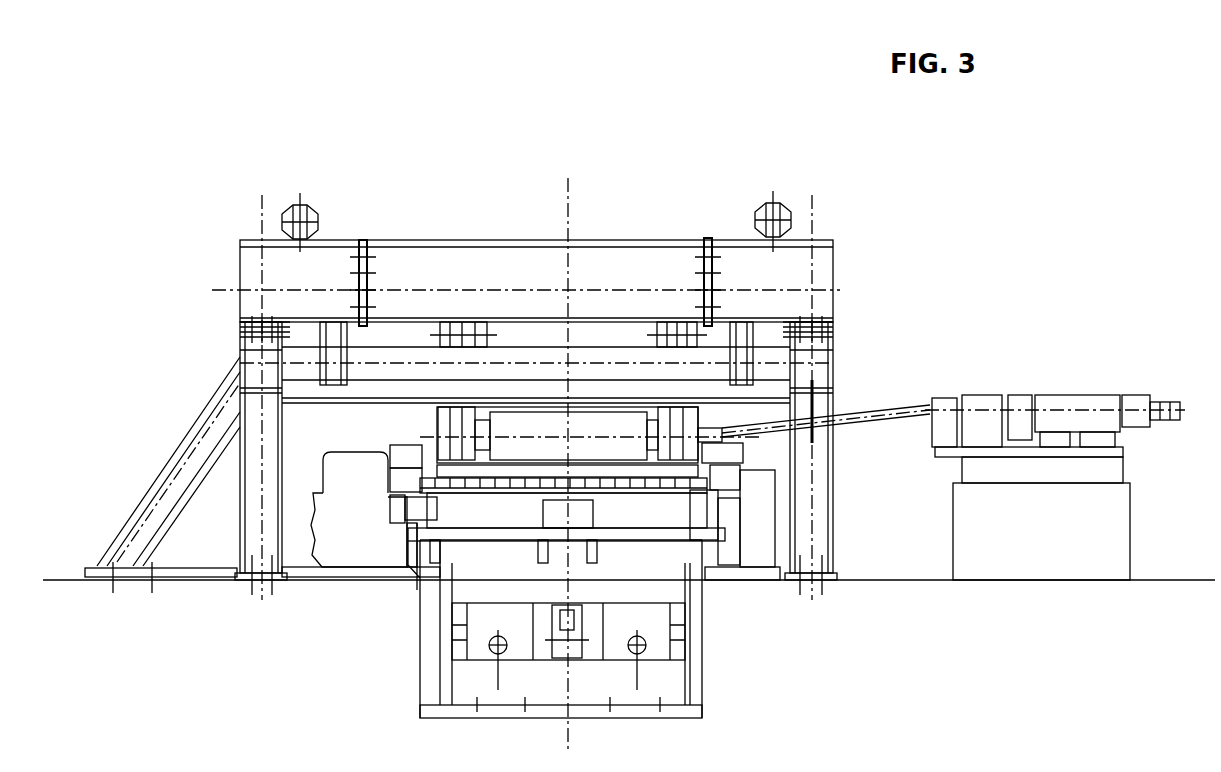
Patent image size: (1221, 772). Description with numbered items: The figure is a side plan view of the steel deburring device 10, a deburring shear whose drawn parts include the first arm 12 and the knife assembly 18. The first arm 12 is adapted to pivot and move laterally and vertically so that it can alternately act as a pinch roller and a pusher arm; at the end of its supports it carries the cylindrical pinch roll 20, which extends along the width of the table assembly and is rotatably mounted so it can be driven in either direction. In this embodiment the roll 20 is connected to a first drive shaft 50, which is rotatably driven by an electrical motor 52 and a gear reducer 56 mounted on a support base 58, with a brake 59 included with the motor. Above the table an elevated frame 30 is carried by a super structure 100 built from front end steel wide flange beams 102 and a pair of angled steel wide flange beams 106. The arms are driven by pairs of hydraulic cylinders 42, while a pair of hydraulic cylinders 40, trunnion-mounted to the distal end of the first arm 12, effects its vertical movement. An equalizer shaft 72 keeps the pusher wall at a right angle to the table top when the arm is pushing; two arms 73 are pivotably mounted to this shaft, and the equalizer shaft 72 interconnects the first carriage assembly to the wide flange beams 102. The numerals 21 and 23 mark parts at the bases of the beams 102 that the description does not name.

The steel deburring device 10 is at (732, 114).
The first arm 12 is at (400, 437).
The knife assembly 18 is at (714, 602).
The cylindrical pinch roll 20 is at (422, 435).
The base plate 21 is at (240, 555).
The base plate 23 is at (833, 548).
The elevated frame 30 is at (695, 234).
The hydraulic cylinders 40 is at (495, 322).
The hydraulic cylinders 42 is at (310, 203).
The first drive shaft 50 is at (873, 413).
The electrical motor 52 is at (1070, 397).
The gear reducer 56 is at (983, 395).
The support base 58 is at (1057, 578).
The brake 59 is at (1023, 395).
The equalizer shaft 72 is at (557, 358).
The arms 73 is at (320, 340).
The super structure 100 is at (230, 315).
The front end steel wide flange beams 102 is at (243, 500).
The angled steel wide flange beams 106 is at (140, 493).